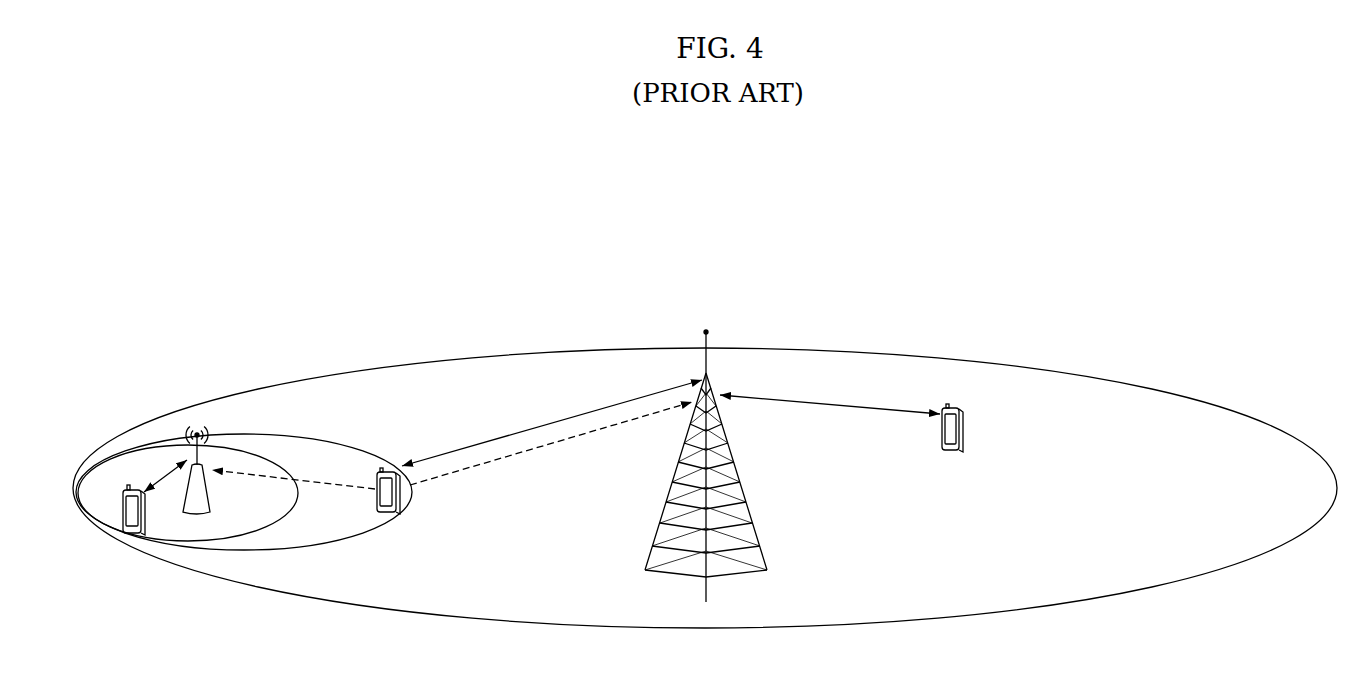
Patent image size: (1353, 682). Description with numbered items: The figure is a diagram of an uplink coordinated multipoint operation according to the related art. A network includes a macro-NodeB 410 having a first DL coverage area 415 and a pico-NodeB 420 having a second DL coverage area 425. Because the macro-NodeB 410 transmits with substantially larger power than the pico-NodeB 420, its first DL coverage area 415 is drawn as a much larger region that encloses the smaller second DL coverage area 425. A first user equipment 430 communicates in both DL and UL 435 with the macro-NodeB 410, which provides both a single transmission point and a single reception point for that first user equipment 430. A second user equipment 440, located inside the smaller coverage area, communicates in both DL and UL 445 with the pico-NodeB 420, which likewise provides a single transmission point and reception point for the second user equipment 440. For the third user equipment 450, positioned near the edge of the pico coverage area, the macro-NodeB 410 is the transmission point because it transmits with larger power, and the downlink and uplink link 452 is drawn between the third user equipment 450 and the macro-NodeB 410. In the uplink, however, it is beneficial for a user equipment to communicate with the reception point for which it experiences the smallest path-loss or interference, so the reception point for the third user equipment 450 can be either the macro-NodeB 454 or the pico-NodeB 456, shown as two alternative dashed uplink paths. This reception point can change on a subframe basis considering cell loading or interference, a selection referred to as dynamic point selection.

The macro-NodeB 410 is at (732, 358).
The first DL coverage area 415 is at (1077, 372).
The pico-NodeB 420 is at (194, 430).
The second DL coverage area 425 is at (353, 446).
The UE1 430 is at (983, 418).
The DL and UL communication between UE1 and macro-NodeB 435 is at (853, 407).
The UE2 440 is at (126, 566).
The DL and UL communication between UE2 and pico-NodeB 445 is at (168, 461).
The UE3 450 is at (385, 542).
The uplink/downlink between UE3 and RP0 452 is at (550, 423).
The macro-NodeB as RP for UE3 454 is at (537, 448).
The pico-NodeB as RP for UE3 456 is at (330, 487).